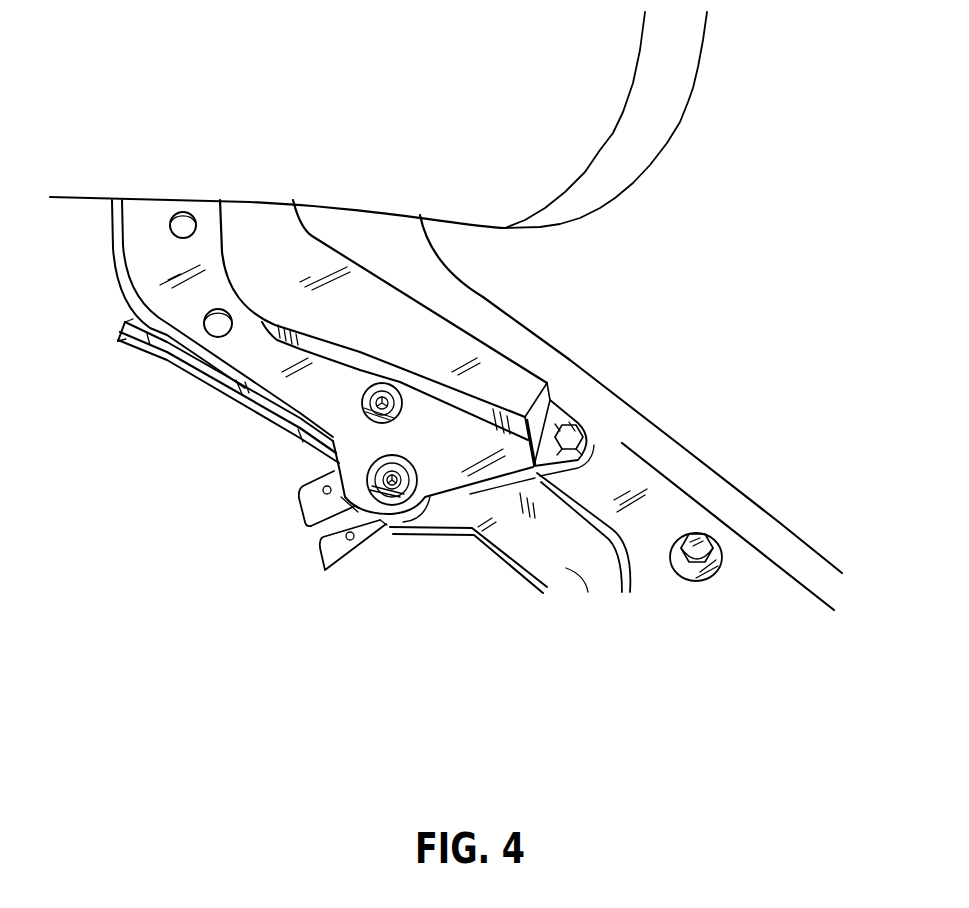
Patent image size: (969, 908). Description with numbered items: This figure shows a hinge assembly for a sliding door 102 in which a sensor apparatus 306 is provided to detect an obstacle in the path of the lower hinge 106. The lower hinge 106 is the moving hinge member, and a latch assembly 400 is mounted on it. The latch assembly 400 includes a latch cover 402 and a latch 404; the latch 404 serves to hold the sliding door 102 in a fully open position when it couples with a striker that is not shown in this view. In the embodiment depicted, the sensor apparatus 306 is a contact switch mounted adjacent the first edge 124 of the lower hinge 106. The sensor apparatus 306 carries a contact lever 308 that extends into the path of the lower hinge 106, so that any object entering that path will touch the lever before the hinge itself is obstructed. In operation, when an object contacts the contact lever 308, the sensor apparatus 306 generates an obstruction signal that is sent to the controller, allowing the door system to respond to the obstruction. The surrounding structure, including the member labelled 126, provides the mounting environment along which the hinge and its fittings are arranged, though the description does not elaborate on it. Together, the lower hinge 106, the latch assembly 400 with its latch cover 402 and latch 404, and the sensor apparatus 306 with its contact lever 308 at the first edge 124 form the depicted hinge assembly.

The sliding door 102 is at (688, 102).
The first edge 124 is at (117, 250).
The contact lever 308 is at (132, 350).
The sensor apparatus 306 is at (227, 410).
The latch assembly 400 is at (500, 363).
The frame rail 126 is at (685, 445).
The latch 404 is at (350, 541).
The latch cover 402 is at (447, 497).
The lower hinge 106 is at (633, 533).